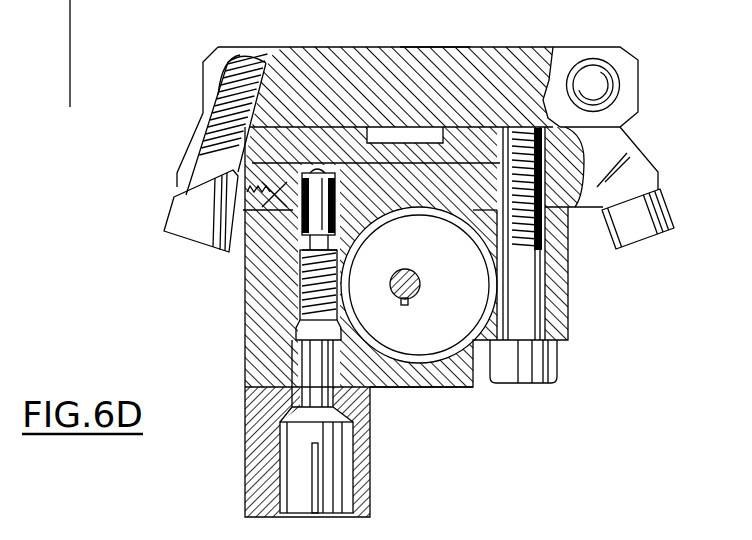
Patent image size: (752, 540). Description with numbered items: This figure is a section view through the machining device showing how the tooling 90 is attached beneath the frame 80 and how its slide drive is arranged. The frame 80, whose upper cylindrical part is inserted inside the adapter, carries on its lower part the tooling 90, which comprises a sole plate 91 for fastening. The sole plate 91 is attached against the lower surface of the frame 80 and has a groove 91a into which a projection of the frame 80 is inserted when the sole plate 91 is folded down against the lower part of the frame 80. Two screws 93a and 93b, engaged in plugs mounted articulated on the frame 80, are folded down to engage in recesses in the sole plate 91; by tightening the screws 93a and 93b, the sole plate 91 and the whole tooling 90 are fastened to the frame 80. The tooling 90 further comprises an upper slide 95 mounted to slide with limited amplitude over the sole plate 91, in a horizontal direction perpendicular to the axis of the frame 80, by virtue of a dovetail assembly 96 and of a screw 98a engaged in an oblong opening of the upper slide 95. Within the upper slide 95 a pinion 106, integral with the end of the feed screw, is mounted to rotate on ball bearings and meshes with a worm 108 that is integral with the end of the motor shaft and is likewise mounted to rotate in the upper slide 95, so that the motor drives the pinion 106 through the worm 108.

The frame 80 is at (367, 70).
The tooling 90 is at (393, 417).
The sole plate 91 is at (512, 85).
The groove 91a is at (432, 72).
The screw 93a is at (174, 203).
The screw 93b is at (650, 230).
The upper slide 95 is at (563, 287).
The dovetail assembly 96 is at (262, 140).
The screw 98a is at (523, 368).
The pinion 106 is at (397, 327).
The worm 108 is at (298, 300).